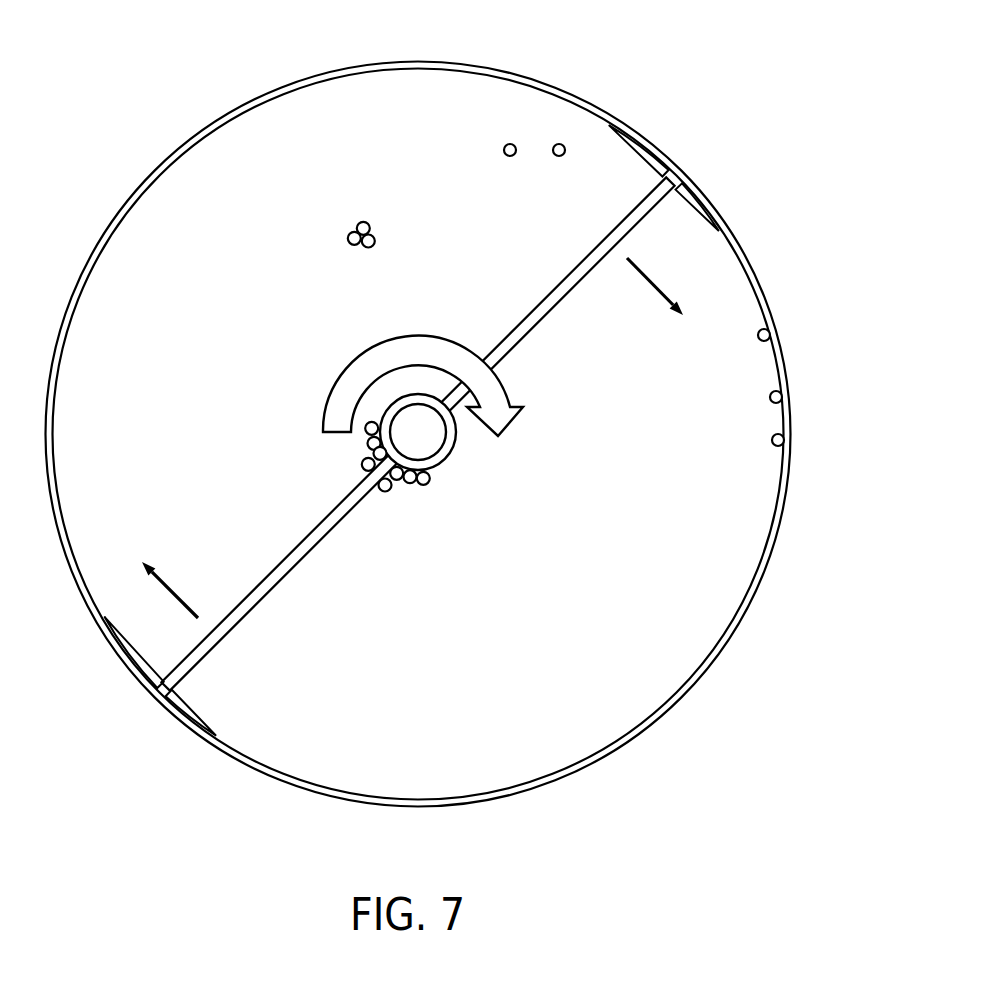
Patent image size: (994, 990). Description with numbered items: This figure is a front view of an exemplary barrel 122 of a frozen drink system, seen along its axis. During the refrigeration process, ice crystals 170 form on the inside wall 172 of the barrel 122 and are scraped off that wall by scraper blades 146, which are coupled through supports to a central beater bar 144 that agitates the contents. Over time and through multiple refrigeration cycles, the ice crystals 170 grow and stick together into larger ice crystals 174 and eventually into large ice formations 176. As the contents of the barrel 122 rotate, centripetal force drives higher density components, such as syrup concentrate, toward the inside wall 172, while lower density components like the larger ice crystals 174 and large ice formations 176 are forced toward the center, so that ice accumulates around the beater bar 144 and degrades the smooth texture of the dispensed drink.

The barrel 122 is at (497, 63).
The beater bar 144 is at (448, 470).
The scraper blades 146 is at (659, 156).
The ice crystals 170 is at (783, 326).
The inside wall 172 is at (331, 780).
The larger ice crystals 174 is at (350, 228).
The large ice formations 176 is at (404, 489).